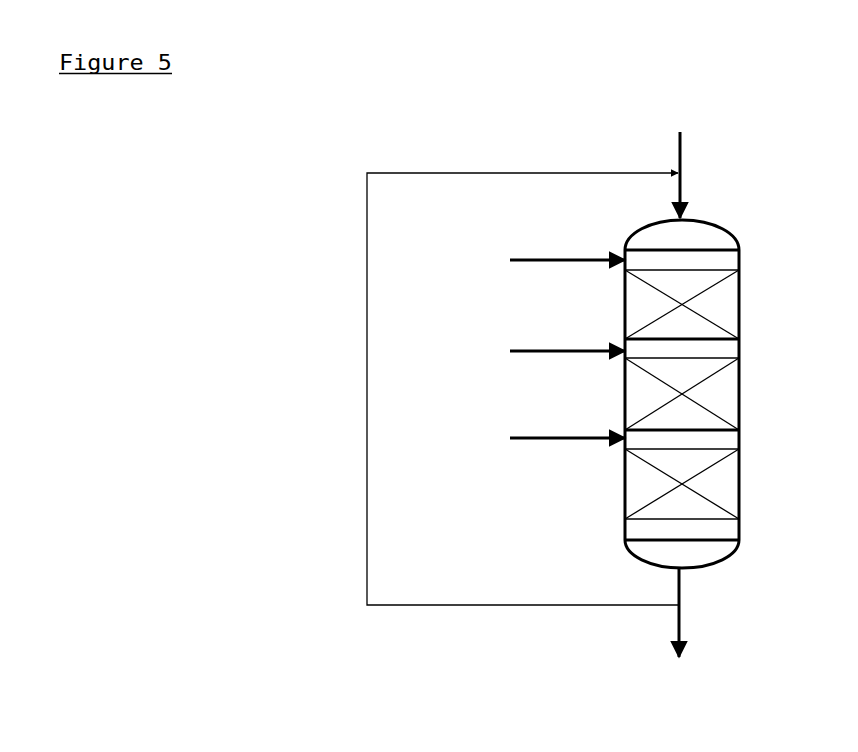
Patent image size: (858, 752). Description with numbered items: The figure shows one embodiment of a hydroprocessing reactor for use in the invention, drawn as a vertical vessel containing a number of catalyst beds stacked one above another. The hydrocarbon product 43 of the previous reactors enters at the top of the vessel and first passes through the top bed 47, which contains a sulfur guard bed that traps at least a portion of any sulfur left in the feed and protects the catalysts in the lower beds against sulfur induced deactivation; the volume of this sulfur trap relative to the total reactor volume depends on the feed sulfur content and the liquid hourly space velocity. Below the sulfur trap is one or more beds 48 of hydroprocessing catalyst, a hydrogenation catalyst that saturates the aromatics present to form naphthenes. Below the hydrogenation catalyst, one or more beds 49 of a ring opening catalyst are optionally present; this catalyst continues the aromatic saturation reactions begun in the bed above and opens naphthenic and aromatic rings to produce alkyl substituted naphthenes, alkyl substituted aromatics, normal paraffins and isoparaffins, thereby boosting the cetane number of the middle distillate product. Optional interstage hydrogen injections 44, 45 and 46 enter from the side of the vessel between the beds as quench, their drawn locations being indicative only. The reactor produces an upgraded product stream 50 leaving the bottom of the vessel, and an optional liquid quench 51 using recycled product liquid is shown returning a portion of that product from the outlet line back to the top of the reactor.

The hydrocarbon product 43 is at (682, 159).
The interstage hydrogen injection 44 is at (550, 258).
The interstage hydrogen injection 45 is at (550, 350).
The interstage hydrogen injection 46 is at (550, 436).
The top bed 47 is at (704, 304).
The bed of hydroprocessing catalyst 48 is at (704, 394).
The bed of ring opening catalyst 49 is at (704, 484).
The upgraded product stream 50 is at (678, 631).
The liquid quench 51 is at (523, 389).